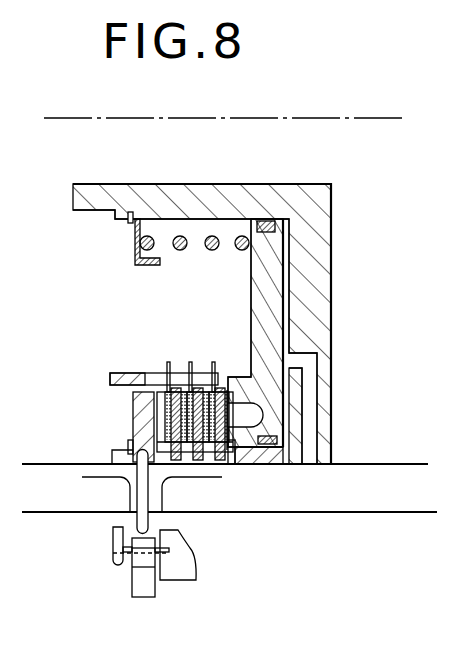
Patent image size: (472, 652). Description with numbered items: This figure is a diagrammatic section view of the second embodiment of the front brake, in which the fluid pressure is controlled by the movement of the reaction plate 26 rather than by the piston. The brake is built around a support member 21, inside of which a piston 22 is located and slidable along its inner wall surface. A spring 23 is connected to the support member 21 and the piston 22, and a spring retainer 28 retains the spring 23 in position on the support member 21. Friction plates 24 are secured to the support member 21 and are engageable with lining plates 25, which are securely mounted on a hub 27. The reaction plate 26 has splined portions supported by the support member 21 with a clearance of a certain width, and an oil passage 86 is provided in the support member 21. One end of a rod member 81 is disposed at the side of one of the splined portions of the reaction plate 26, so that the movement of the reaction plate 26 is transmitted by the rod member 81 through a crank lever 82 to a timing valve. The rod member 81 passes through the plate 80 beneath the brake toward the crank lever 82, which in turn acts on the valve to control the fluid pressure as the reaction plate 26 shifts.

The support member 21 is at (323, 259).
The piston 22 is at (273, 311).
The spring member 23 is at (216, 250).
The frictional coupling plates 24 is at (220, 461).
The lining plates 25 is at (213, 372).
The reaction plate 26 is at (133, 420).
The hub 27 is at (146, 373).
The spring retainer 28 is at (150, 266).
The base plate 80 is at (363, 500).
The rod member 81 is at (137, 497).
The crank lever 82 is at (143, 588).
The oil passage 86 is at (317, 423).